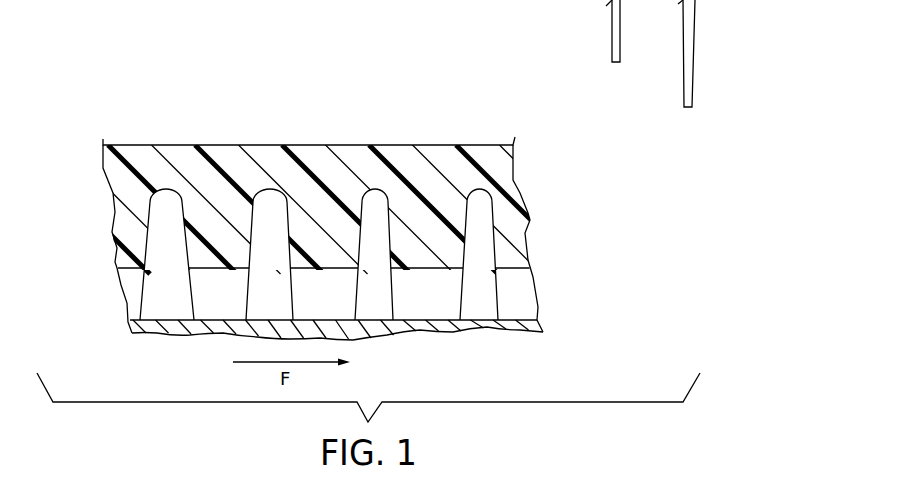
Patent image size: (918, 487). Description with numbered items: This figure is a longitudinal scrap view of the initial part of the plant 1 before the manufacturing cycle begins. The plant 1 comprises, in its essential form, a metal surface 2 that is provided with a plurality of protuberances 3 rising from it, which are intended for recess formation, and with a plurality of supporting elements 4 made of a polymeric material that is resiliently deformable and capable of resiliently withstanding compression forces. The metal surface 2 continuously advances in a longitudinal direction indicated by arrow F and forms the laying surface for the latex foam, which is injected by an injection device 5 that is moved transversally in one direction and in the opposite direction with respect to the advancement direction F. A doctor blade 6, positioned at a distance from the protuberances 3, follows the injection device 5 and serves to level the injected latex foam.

The plant 1 is at (238, 132).
The metal surface 2 is at (415, 323).
The protuberances 3 is at (160, 303).
The supporting elements 4 is at (403, 146).
The injection device 5 is at (612, 32).
The doctor blade 6 is at (685, 100).